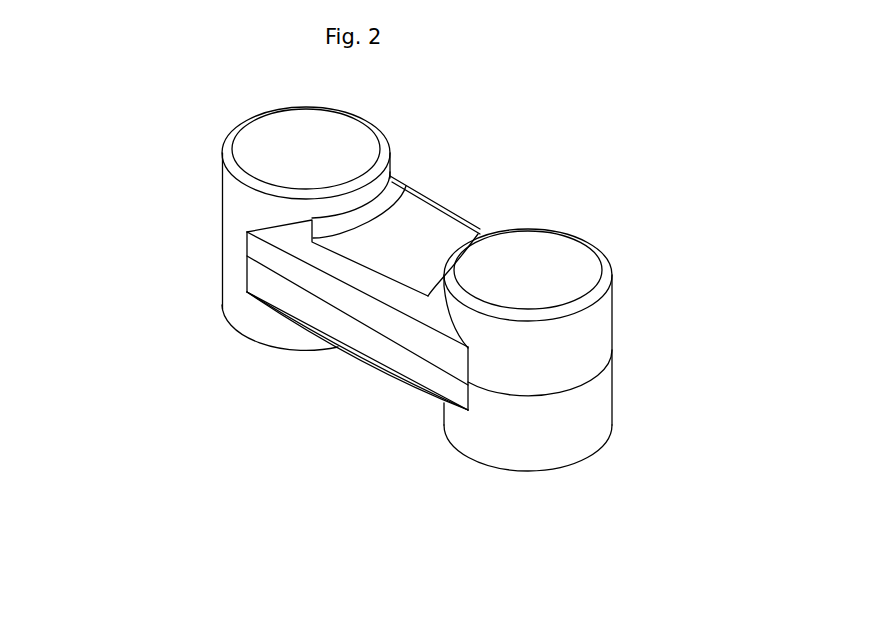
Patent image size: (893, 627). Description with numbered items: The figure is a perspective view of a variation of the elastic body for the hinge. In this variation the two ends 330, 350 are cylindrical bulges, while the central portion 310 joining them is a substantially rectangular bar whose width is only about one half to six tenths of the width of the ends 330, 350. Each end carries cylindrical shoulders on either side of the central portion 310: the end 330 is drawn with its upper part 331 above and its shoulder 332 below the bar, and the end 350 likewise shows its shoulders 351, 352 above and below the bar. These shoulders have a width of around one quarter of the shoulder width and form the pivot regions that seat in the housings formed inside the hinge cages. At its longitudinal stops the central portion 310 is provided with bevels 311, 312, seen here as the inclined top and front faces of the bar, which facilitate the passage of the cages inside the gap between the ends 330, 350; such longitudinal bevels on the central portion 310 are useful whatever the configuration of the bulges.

The central portion 310 is at (353, 336).
The bevel 311 is at (353, 309).
The bevel 312 is at (357, 362).
The end 330 is at (301, 264).
The upper portion of first cylindrical post 331 is at (383, 150).
The cylindrical shoulder 332 is at (237, 366).
The end 350 is at (594, 374).
The cylindrical shoulder 351 is at (603, 275).
The cylindrical shoulder 352 is at (500, 461).